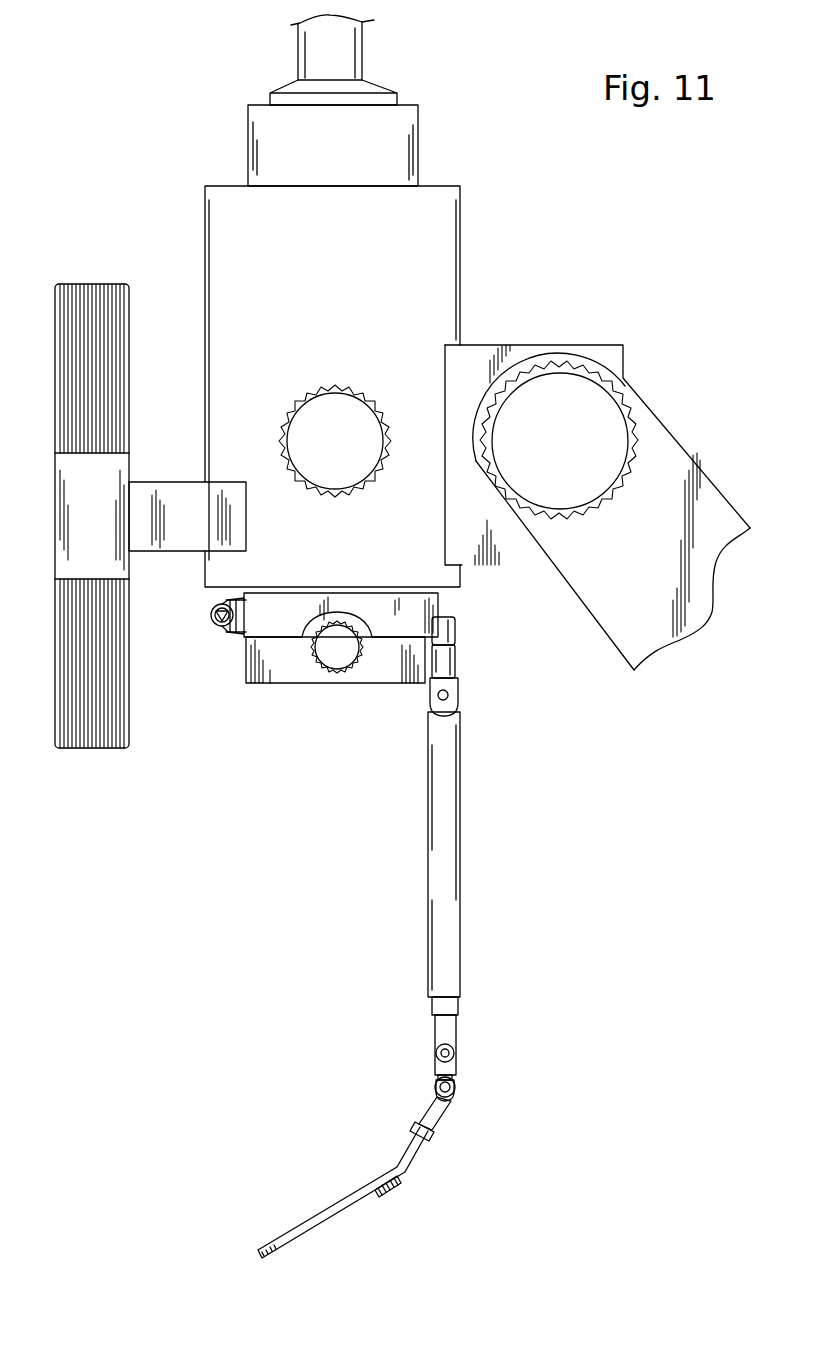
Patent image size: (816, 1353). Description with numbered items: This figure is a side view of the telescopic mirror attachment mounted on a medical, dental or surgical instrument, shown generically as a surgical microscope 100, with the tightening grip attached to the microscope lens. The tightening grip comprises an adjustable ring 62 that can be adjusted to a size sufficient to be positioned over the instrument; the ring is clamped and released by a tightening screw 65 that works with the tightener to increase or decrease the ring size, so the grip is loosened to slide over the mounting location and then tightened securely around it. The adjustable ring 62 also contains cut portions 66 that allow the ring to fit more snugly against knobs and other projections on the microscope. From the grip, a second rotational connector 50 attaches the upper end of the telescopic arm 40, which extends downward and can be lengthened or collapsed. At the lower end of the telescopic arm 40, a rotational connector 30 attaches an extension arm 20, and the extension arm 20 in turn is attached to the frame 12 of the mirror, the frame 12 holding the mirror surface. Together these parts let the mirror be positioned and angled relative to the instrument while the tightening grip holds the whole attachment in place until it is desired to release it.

The surgical microscope 100 is at (498, 233).
The tightening screw 65 is at (218, 626).
The adjustable ring 62 is at (272, 624).
The cut portions 66 is at (363, 628).
The second rotational connector 50 is at (457, 688).
The telescopic arm 40 is at (461, 856).
The rotational connector 30 is at (457, 1087).
The extension arm 20 is at (412, 1153).
The frame 12 is at (318, 1216).